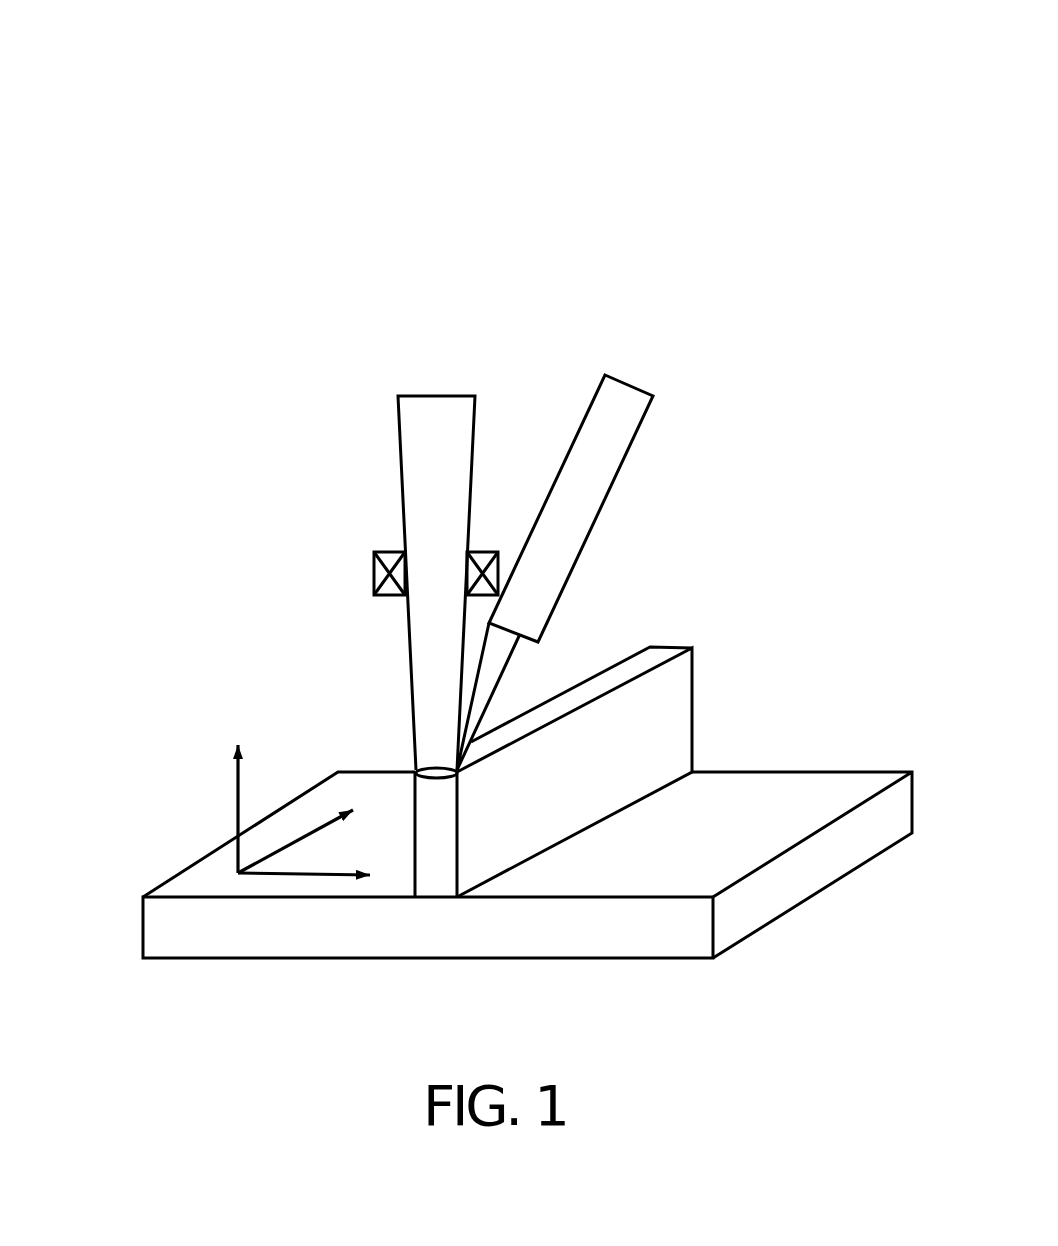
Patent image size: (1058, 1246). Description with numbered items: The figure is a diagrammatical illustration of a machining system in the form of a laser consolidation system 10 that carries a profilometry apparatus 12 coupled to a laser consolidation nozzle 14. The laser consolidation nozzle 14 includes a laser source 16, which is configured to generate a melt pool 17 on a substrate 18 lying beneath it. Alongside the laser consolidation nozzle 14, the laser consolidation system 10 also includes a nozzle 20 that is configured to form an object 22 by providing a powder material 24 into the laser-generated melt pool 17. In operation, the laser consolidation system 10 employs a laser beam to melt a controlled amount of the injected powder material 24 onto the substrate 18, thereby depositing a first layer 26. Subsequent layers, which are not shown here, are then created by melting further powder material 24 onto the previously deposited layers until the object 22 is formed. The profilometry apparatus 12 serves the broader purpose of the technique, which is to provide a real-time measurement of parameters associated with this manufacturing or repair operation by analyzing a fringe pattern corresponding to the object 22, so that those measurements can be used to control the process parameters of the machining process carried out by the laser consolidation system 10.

The laser consolidation system 10 is at (822, 90).
The profilometry apparatus 12 is at (377, 578).
The laser consolidation nozzle 14 is at (552, 352).
The laser source 16 is at (442, 405).
The melt pool 17 is at (427, 765).
The substrate 18 is at (150, 932).
The nozzle 20 is at (628, 395).
The object 22 is at (707, 647).
The powder material 24 is at (490, 668).
The first layer 26 is at (683, 708).